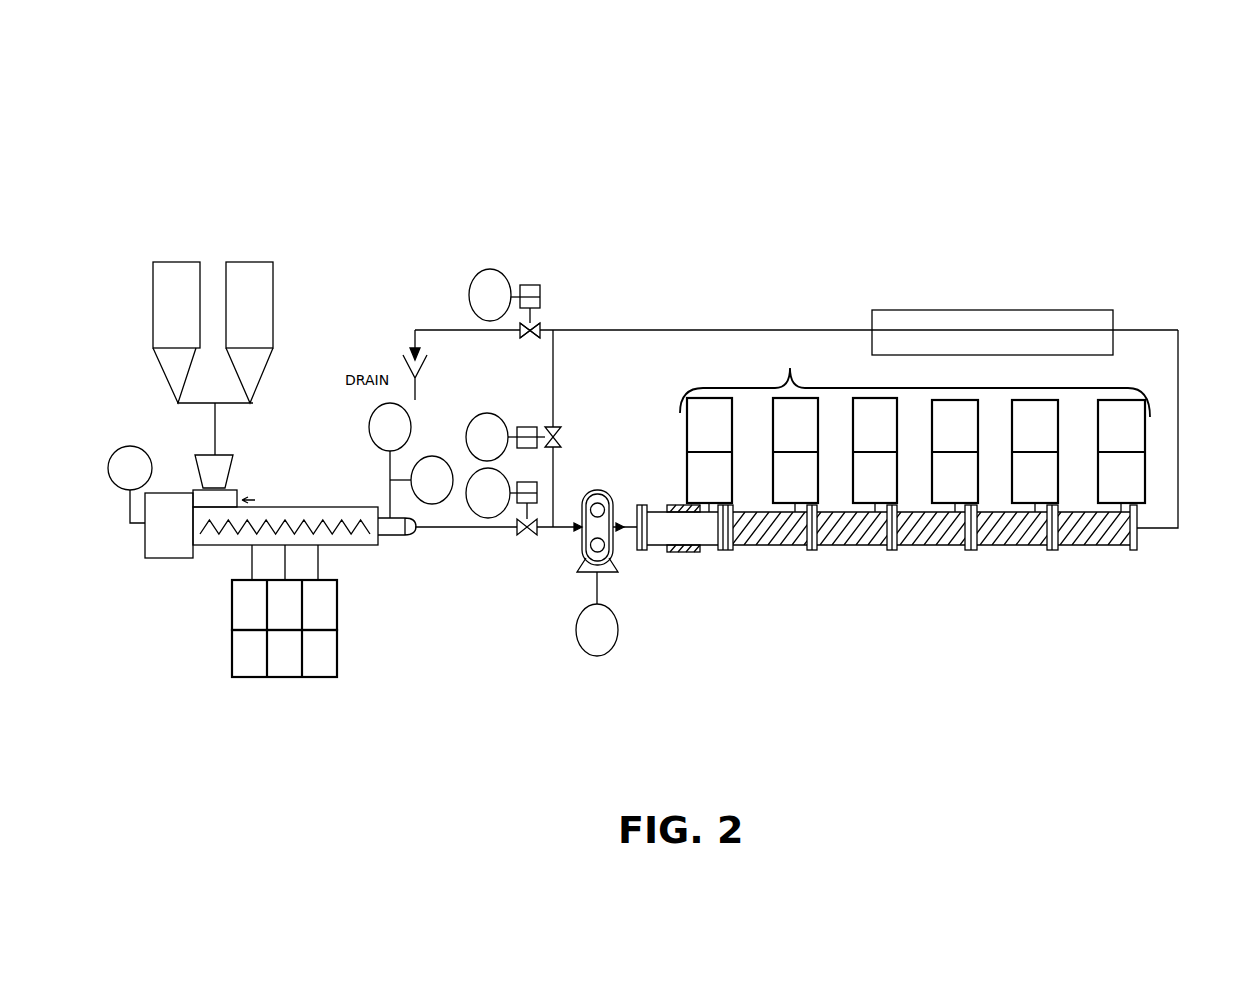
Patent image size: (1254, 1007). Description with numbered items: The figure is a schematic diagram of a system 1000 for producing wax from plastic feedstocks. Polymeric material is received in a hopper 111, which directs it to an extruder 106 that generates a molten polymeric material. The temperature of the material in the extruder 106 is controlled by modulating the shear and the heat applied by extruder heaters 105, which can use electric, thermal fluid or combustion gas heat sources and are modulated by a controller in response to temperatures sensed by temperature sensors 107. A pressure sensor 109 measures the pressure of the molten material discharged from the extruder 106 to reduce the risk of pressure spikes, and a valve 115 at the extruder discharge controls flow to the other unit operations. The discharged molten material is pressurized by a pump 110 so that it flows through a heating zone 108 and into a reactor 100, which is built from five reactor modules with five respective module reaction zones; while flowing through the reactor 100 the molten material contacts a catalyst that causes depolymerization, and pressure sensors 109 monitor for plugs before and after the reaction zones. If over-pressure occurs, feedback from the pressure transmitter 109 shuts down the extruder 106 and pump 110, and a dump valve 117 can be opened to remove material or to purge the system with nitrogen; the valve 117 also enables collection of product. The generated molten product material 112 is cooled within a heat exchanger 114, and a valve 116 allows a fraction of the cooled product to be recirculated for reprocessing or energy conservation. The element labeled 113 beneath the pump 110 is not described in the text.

The system 1000 is at (650, 176).
The reactor 100 is at (898, 442).
The extruder heater 105 is at (322, 613).
The extruder 106 is at (212, 546).
The temperature sensor 107 is at (322, 658).
The heating zone 108 is at (682, 549).
The pressure sensor 109 is at (385, 418).
The pump 110 is at (580, 537).
The hopper 111 is at (273, 278).
The generated molten product material 112 is at (1180, 402).
The pump motor 113 is at (585, 643).
The heat exchanger 114 is at (917, 325).
The valve 115 is at (490, 507).
The valve 116 is at (493, 447).
The dump valve 117 is at (495, 293).